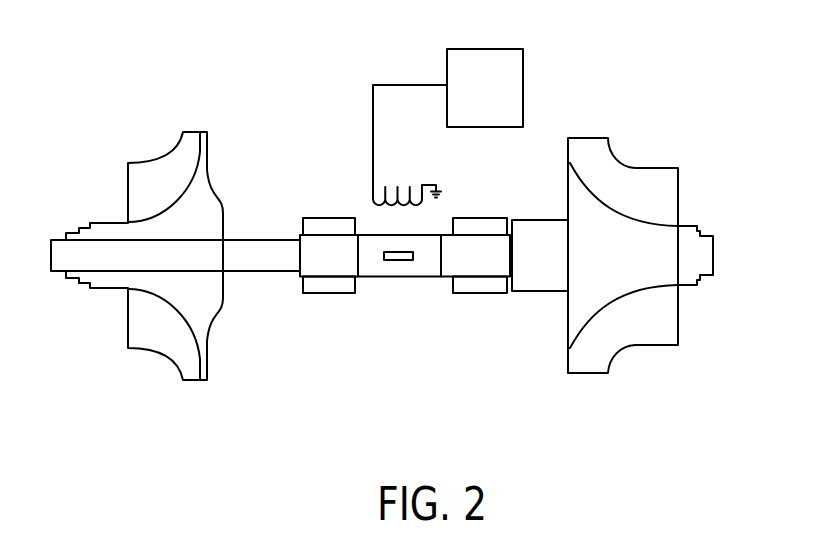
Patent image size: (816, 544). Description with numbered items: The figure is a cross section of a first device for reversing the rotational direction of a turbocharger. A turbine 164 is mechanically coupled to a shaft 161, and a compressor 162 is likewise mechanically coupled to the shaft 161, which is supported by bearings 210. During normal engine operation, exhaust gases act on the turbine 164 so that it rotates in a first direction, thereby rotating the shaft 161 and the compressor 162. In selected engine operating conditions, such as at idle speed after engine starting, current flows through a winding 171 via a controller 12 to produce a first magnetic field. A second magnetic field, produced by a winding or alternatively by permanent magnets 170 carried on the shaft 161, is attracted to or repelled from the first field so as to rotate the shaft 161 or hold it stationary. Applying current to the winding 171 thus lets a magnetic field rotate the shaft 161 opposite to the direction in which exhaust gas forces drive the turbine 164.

The controller 12 is at (498, 100).
The shaft 161 is at (242, 272).
The compressor 162 is at (197, 380).
The turbine 164 is at (588, 375).
The permanent magnets 170 is at (398, 262).
The winding 171 is at (390, 208).
The bearings 210 is at (326, 220).